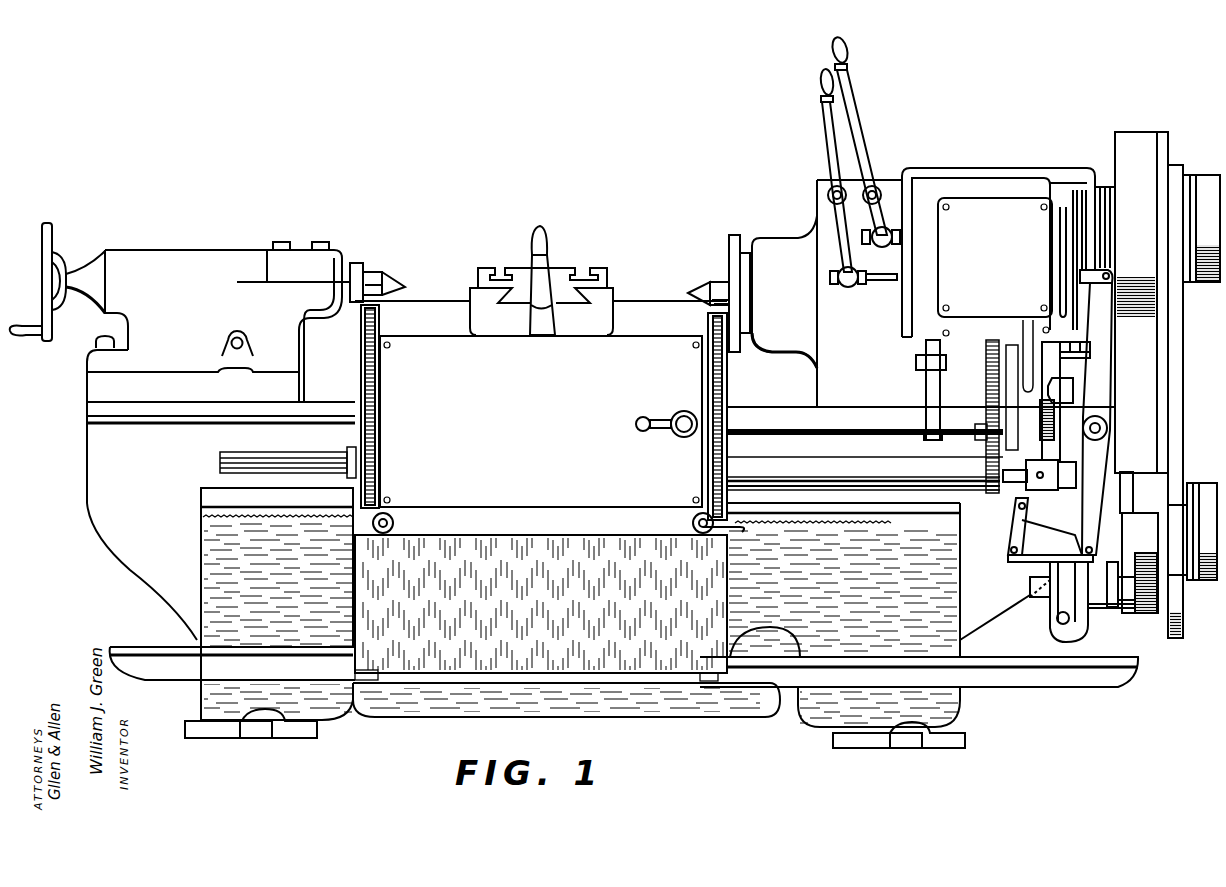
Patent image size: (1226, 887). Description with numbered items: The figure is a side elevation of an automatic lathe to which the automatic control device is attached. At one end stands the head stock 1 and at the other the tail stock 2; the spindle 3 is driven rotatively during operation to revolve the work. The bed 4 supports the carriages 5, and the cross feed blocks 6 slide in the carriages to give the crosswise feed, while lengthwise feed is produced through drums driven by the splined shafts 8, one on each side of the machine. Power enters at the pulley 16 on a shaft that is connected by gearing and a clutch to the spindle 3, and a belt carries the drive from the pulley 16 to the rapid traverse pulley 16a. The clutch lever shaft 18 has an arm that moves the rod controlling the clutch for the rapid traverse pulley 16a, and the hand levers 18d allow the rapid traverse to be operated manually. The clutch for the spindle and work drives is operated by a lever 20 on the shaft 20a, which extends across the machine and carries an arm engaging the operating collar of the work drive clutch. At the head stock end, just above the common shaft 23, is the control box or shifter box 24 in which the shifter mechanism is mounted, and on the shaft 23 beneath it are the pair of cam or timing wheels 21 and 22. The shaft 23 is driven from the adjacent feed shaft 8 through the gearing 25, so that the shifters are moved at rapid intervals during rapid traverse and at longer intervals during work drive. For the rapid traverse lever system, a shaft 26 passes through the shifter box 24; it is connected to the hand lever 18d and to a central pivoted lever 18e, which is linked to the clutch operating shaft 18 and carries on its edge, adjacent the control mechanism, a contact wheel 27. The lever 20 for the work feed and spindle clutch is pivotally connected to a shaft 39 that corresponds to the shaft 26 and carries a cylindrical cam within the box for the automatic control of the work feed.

The head stock 1 is at (800, 250).
The tail stock 2 is at (193, 248).
The spindle 3 is at (712, 287).
The bed 4 is at (305, 500).
The carriage 5 is at (412, 358).
The cross feed block 6 is at (552, 272).
The splined shaft 8 is at (222, 461).
The pulley 16 is at (1203, 200).
The rapid traverse pulley 16a is at (1200, 540).
The clutch lever shaft 18 is at (1020, 508).
The hand lever 18d is at (833, 150).
The central pivoted lever 18e is at (1110, 356).
The lever 20 is at (866, 152).
The shaft 20a is at (880, 190).
The cam wheel 21 is at (926, 386).
The cam wheel 22 is at (1066, 382).
The shaft 23 is at (958, 414).
The control box 24 is at (998, 214).
The gearing 25 is at (983, 450).
The shaft 26 is at (880, 282).
The contact wheel 27 is at (1090, 343).
The shaft 39 is at (892, 230).